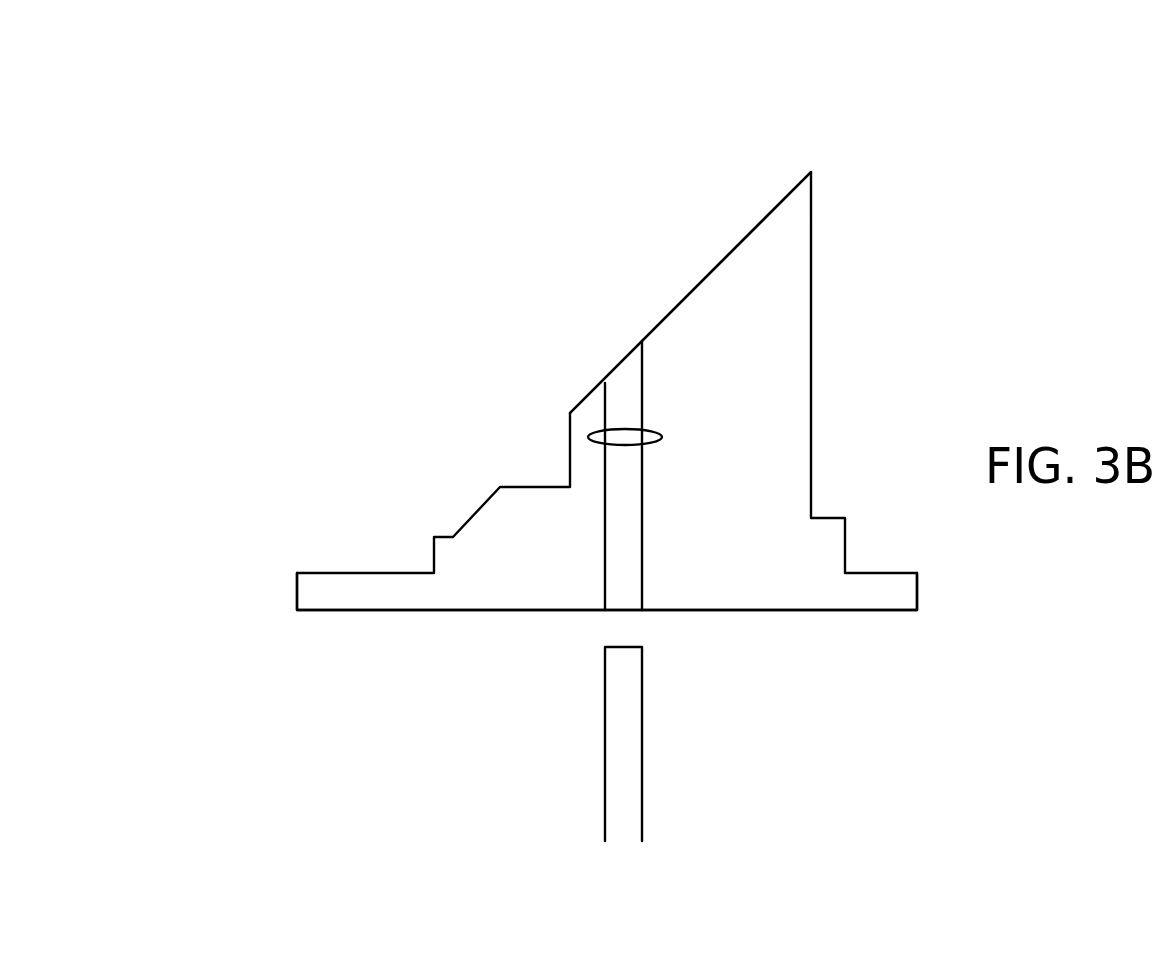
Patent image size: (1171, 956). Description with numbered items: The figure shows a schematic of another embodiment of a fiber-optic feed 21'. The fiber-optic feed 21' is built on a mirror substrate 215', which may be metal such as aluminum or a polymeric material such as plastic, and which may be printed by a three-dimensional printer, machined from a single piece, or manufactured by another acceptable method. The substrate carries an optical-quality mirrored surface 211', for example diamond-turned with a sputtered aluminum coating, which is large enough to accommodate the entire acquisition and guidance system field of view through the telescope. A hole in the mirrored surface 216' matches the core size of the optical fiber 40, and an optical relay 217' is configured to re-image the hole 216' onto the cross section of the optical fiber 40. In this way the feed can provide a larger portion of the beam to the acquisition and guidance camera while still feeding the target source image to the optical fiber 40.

The fiber-optic feed 21' is at (597, 327).
The mirrored surface 211' is at (675, 292).
The hole in the mirrored surface 216' is at (563, 448).
The optical relay 217' is at (731, 415).
The mirror substrate 215' is at (555, 613).
The optical fiber 40 is at (645, 757).